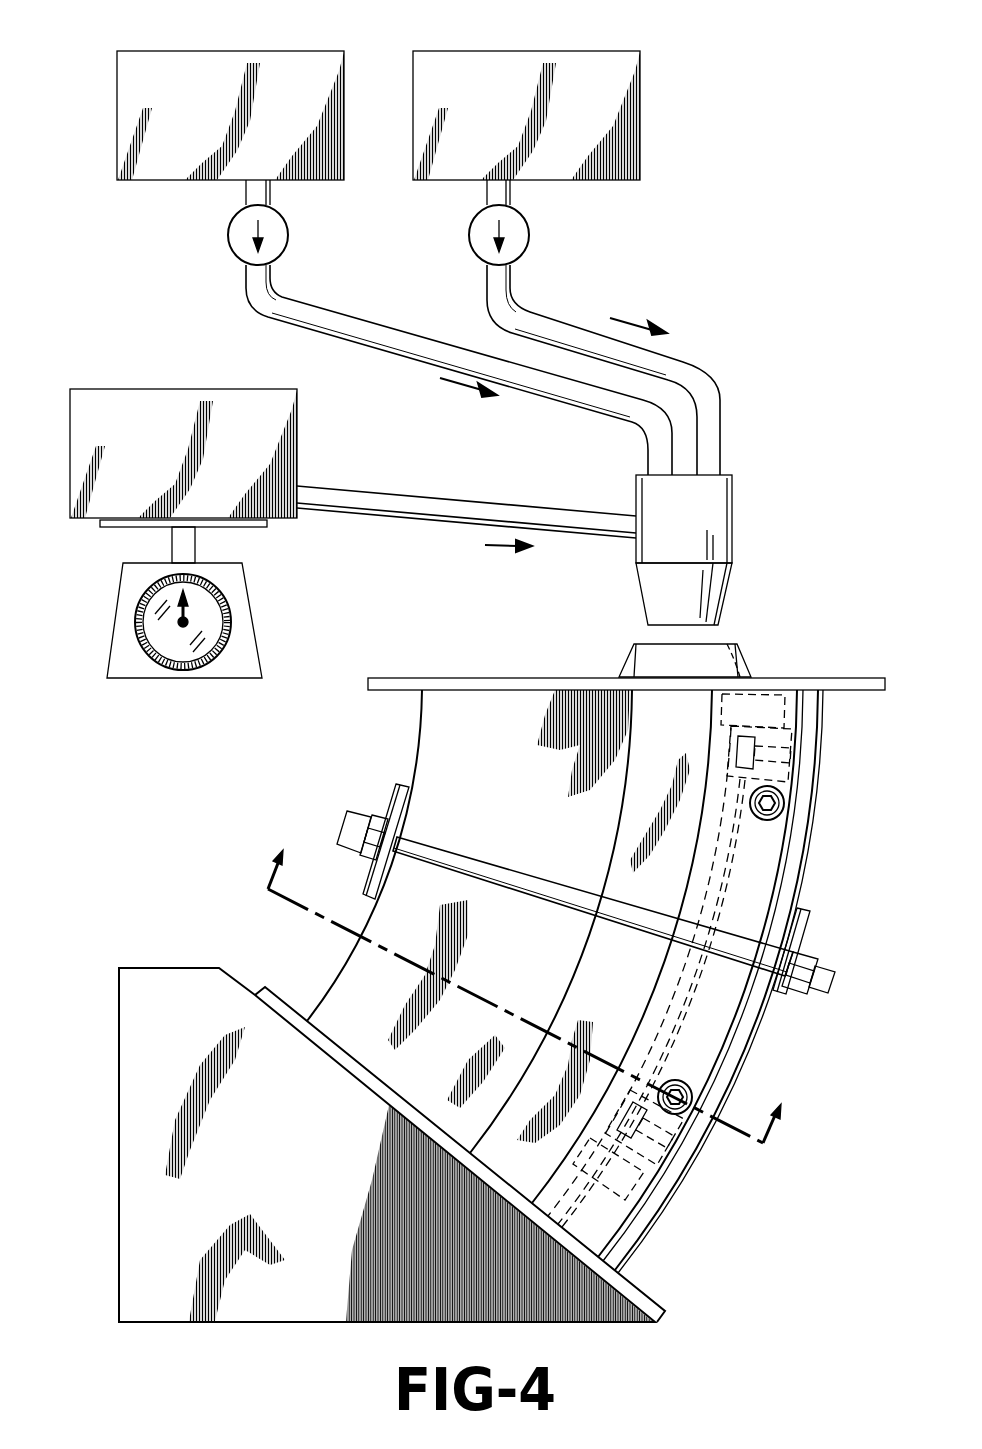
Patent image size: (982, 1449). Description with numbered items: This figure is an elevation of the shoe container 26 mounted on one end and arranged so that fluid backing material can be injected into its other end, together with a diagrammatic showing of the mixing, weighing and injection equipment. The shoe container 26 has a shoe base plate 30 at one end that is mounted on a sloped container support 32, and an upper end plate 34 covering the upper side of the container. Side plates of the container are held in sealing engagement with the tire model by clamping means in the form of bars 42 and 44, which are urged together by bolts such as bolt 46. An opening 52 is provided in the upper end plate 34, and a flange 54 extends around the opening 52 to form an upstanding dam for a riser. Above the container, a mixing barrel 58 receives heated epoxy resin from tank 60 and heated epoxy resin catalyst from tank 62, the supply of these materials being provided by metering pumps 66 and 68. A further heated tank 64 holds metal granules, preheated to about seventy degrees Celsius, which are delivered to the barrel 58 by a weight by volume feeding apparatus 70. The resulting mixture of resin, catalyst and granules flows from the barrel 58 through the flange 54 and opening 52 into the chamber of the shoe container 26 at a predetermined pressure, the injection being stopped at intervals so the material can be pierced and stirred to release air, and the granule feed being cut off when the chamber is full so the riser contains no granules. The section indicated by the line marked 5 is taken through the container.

The tank 60 is at (205, 65).
The tank 62 is at (477, 65).
The heated tank 64 is at (137, 405).
The metering pump 66 is at (281, 236).
The metering pump 68 is at (521, 236).
The weight by volume feeding apparatus 70 is at (237, 593).
The mixing barrel 58 is at (697, 517).
The flange 54 is at (627, 643).
The opening 52 is at (727, 660).
The upper end plate 34 is at (867, 683).
The shoe container 26 is at (770, 845).
The bar 44 is at (400, 792).
The bolt 46 is at (508, 877).
The bar 42 is at (800, 917).
The sloped container support 32 is at (142, 1203).
The shoe base plate 30 is at (638, 1298).
The section line 5- 5 is at (532, 983).